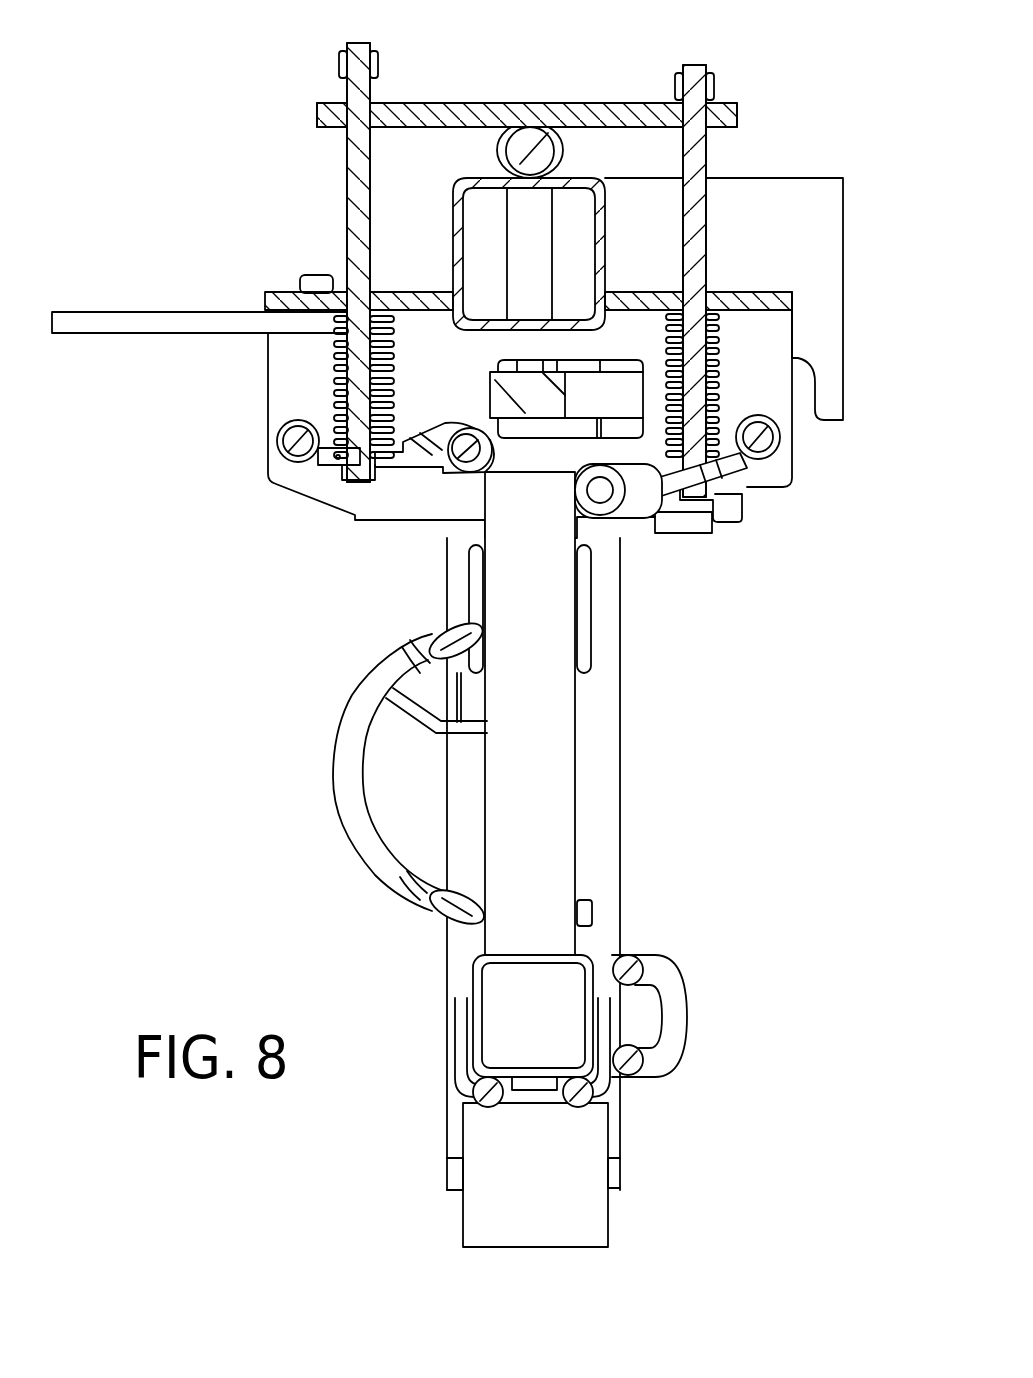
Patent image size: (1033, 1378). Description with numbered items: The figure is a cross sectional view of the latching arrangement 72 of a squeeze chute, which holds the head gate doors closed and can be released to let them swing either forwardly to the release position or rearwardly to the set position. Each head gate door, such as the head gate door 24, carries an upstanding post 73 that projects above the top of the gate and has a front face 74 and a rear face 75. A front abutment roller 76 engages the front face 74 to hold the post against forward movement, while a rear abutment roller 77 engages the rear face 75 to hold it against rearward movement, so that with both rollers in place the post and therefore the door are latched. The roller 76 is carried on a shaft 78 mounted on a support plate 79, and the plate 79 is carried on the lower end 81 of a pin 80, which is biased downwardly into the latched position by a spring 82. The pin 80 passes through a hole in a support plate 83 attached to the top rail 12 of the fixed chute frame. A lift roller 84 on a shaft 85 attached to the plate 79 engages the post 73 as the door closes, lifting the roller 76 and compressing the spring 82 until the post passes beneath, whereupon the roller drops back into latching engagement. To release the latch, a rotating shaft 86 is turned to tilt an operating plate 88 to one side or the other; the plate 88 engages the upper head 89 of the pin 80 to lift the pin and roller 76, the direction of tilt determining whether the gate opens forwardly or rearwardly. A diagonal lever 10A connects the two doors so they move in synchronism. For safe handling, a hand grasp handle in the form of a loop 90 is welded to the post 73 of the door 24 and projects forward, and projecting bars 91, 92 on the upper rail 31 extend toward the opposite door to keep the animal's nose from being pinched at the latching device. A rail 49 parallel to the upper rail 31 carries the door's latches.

The operating plate 88 is at (480, 103).
The rotating shaft 86 is at (524, 142).
The upper head 89 is at (345, 70).
The latching arrangement 72 is at (744, 148).
The pin 80 is at (355, 223).
The support plate 83 is at (383, 302).
The horizontal rail 12 is at (596, 238).
The diagonal lever 10A is at (608, 398).
The spring 82 is at (340, 345).
The support plate 79 is at (322, 430).
The shaft 85 is at (270, 433).
The lift roller 84 is at (292, 448).
The lower end 81 is at (342, 477).
The shaft 78 is at (463, 449).
The front face 74 is at (487, 493).
The front abutment roller 76 is at (463, 432).
The rear abutment roller 77 is at (595, 467).
The rear face 75 is at (575, 503).
The upstanding post 73 is at (557, 590).
The rail 49 is at (594, 626).
The hand grasp handle loop 90 is at (348, 762).
The upper rail 31 is at (587, 956).
The projecting bar 91 is at (668, 998).
The head gate door 24 is at (705, 1122).
The projecting bar 92 is at (578, 1092).